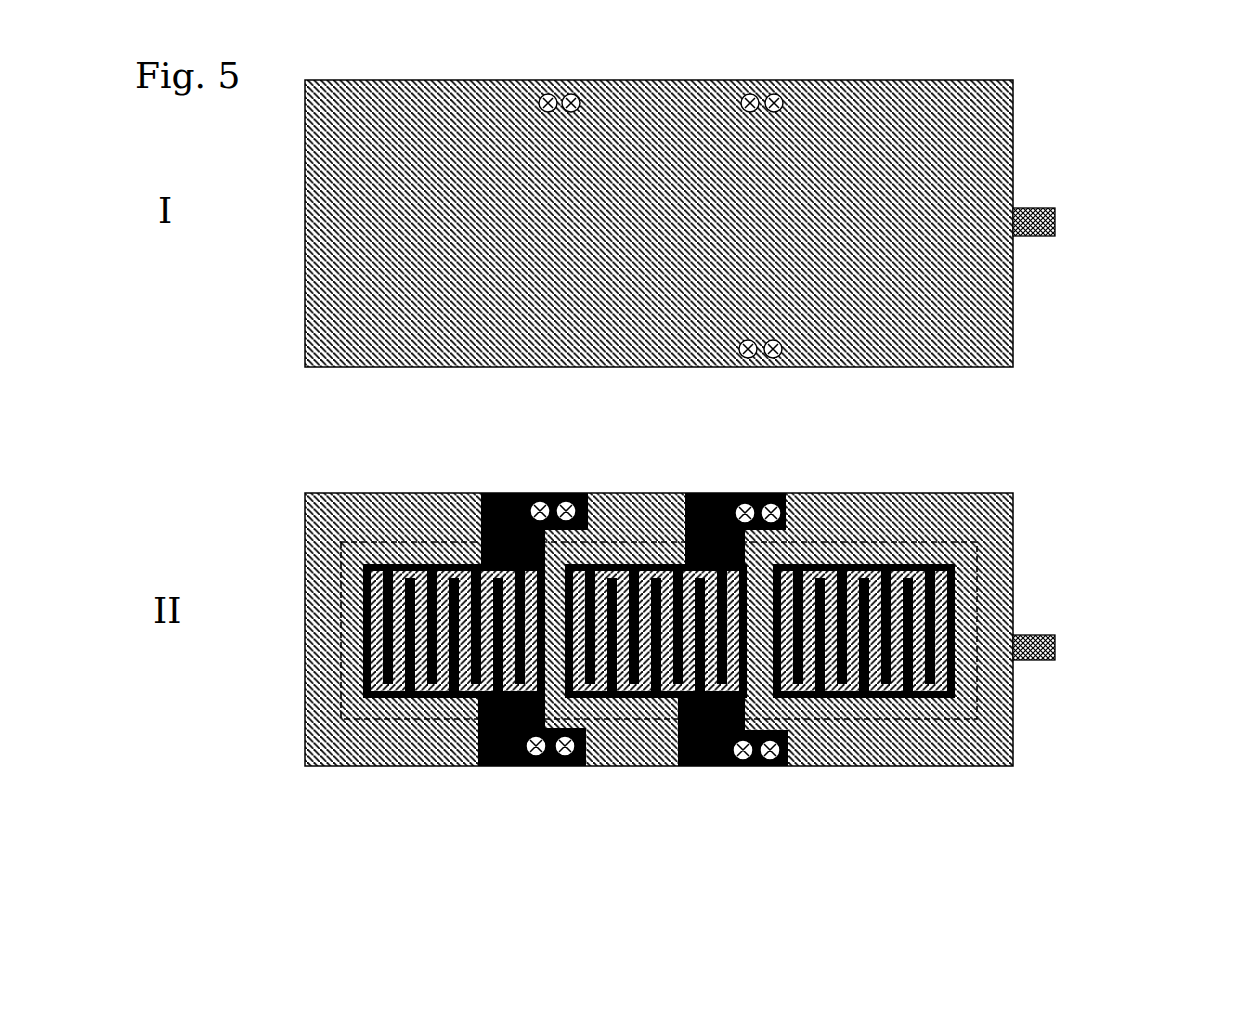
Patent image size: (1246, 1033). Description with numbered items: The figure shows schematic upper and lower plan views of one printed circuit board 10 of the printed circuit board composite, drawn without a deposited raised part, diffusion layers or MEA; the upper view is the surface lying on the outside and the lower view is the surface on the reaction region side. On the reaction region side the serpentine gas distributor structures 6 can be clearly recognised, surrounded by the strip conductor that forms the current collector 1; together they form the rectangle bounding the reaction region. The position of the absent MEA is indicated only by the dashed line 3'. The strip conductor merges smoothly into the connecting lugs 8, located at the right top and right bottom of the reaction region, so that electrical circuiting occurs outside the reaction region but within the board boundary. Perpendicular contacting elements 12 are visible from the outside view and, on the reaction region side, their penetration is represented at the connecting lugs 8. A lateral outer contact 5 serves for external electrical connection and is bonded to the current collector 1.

The current collector 1 is at (409, 634).
The dashed line indicating MEA position 3' is at (659, 706).
The outer contact 5 is at (1013, 650).
The gas distributor structure 6 is at (378, 557).
The connecting lug 8 is at (508, 755).
The printed circuit board 10 is at (975, 255).
The perpendicular contacting element 12 is at (740, 347).